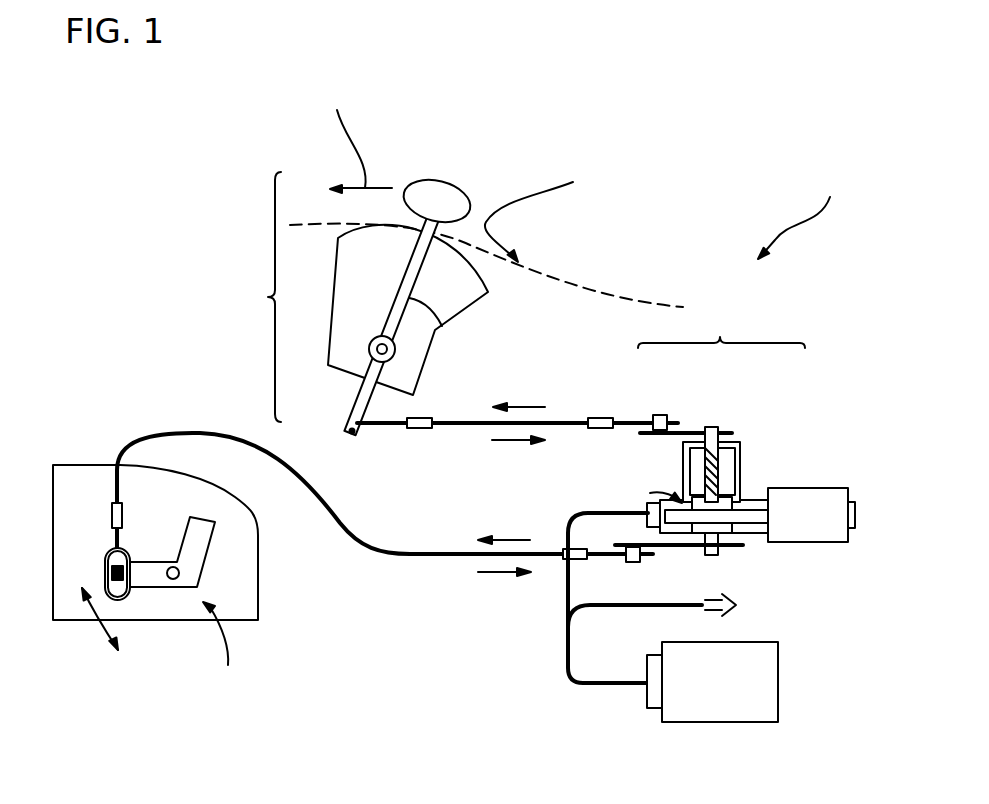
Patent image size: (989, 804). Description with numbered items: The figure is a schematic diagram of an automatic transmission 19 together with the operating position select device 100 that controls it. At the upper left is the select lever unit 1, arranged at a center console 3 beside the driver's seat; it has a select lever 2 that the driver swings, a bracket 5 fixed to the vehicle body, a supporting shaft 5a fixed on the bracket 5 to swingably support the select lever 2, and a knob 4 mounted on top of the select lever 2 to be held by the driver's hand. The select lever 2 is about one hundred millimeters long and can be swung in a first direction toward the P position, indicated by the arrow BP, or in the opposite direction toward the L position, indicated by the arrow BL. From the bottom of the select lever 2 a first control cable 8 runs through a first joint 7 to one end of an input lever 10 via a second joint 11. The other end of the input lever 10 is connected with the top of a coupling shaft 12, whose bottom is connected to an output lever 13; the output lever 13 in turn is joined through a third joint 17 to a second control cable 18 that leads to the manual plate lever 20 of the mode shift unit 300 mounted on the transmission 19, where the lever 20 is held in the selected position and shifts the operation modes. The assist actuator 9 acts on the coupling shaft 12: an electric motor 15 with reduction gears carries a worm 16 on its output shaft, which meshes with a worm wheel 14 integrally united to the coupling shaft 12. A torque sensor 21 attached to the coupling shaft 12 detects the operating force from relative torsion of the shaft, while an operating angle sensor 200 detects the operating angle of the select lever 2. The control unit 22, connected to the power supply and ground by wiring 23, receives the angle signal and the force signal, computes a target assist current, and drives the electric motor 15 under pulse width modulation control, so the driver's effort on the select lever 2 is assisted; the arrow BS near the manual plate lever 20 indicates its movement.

The select lever unit 1 is at (266, 297).
The select lever 2 is at (442, 324).
The center console 3 is at (593, 295).
The knob 4 is at (445, 192).
The bracket 5 is at (357, 293).
The supporting shaft 5a is at (395, 351).
The first joint 7 is at (358, 427).
The first control cable 8 is at (568, 420).
The assist actuator 9 is at (721, 326).
The input lever 10 is at (668, 437).
The second joint 11 is at (663, 412).
The coupling shaft 12 is at (717, 426).
The output lever 13 is at (727, 550).
The worm wheel 14 is at (698, 533).
The electric motor 15 is at (820, 488).
The worm 16 is at (750, 508).
The third joint 17 is at (628, 562).
The second control cable 18 is at (380, 528).
The automatic transmission 19 is at (258, 568).
The manual plate lever 20 is at (152, 577).
The torque sensor 21 is at (740, 460).
The control unit 22 is at (770, 682).
The wiring harness 23 is at (568, 610).
The operating position select device 100 is at (810, 215).
The operating angle sensor 200 is at (647, 484).
The mode shift unit 300 is at (236, 649).
The arrow toward P position BP is at (358, 137).
The arrow toward L position BL is at (538, 208).
The switch operating direction BS is at (97, 627).